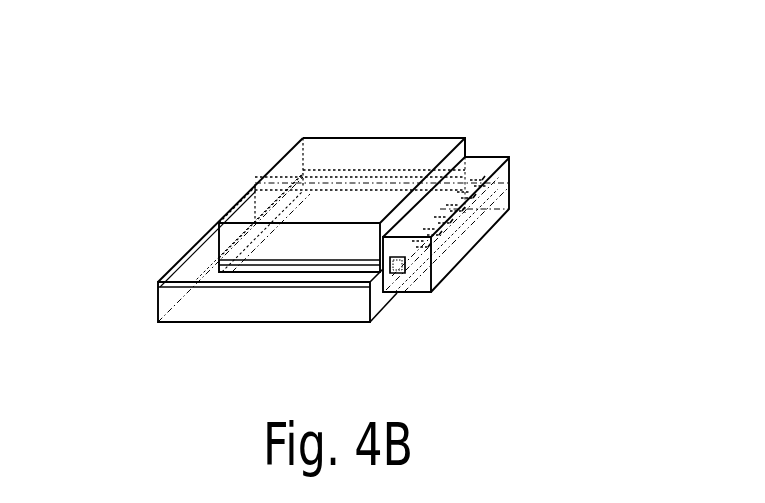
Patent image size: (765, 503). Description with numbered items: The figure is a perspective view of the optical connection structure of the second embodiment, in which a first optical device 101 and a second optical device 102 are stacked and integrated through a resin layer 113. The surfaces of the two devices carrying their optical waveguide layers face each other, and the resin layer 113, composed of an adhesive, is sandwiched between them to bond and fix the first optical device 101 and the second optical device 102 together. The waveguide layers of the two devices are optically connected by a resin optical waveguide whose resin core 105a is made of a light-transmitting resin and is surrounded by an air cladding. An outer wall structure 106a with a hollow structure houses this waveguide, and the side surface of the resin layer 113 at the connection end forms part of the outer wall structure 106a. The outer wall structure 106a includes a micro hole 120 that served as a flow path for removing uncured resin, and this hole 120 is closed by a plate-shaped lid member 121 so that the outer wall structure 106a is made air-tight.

The first optical device 101 is at (157, 309).
The second optical device 102 is at (367, 138).
The resin layer 113 is at (277, 268).
The hole 120 is at (404, 293).
The lid member 121 is at (405, 266).
The resin core 105a is at (473, 183).
The outer wall structure 106a is at (510, 192).